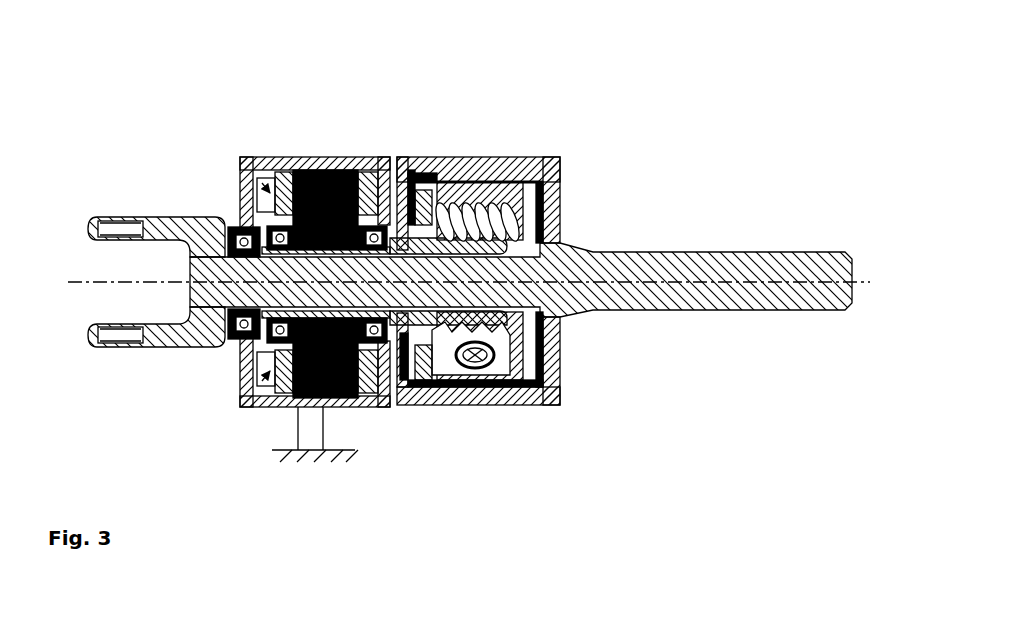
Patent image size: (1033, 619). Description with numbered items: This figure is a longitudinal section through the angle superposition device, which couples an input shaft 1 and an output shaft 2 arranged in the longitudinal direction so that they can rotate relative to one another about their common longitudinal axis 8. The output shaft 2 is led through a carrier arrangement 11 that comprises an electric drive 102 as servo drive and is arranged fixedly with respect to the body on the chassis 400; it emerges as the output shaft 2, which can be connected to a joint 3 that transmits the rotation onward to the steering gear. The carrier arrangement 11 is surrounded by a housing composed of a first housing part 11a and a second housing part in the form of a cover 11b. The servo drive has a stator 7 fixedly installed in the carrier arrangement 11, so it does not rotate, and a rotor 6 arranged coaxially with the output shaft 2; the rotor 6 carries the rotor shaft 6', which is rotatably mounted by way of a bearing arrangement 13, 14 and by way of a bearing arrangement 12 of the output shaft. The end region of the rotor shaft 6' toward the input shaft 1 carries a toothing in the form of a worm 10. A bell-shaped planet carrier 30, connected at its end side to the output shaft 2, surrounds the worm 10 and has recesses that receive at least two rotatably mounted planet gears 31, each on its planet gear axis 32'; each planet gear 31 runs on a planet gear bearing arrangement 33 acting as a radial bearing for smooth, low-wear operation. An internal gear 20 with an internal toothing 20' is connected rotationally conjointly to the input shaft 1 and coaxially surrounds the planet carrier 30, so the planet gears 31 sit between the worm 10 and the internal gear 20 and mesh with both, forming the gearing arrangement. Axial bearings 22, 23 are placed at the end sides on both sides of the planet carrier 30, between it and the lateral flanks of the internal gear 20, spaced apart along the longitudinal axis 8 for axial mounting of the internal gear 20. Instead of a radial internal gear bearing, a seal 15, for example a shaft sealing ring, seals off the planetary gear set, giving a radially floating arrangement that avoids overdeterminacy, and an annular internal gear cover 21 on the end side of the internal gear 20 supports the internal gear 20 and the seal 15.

The input shaft 1 is at (800, 267).
The output shaft 2 is at (145, 327).
The joint 3 is at (92, 346).
The rotor 6 is at (312, 242).
The rotor shaft 6' is at (477, 167).
The stator 7 is at (321, 167).
The longitudinal axis 8 is at (100, 280).
The worm 10 is at (557, 228).
The carrier arrangement 11 is at (256, 320).
The first housing part 11a is at (335, 167).
The cover 11b is at (243, 207).
The bearing arrangement of the output shaft 12 is at (238, 330).
The bearing arrangement 13 is at (242, 390).
The bearing arrangement 14 is at (385, 390).
The seal 15 is at (403, 165).
The internal gear 20 is at (521, 251).
The internal toothing 20' is at (498, 424).
The internal gear cover 21 is at (402, 165).
The axial bearing 22 is at (428, 175).
The axial bearing 23 is at (557, 157).
The planet carrier 30 is at (562, 178).
The planet gear 31 is at (468, 400).
The planet gear axis 32' is at (508, 413).
The planet gear bearing arrangement 33 is at (470, 382).
The electric drive 102 is at (244, 157).
The chassis 400 is at (303, 485).